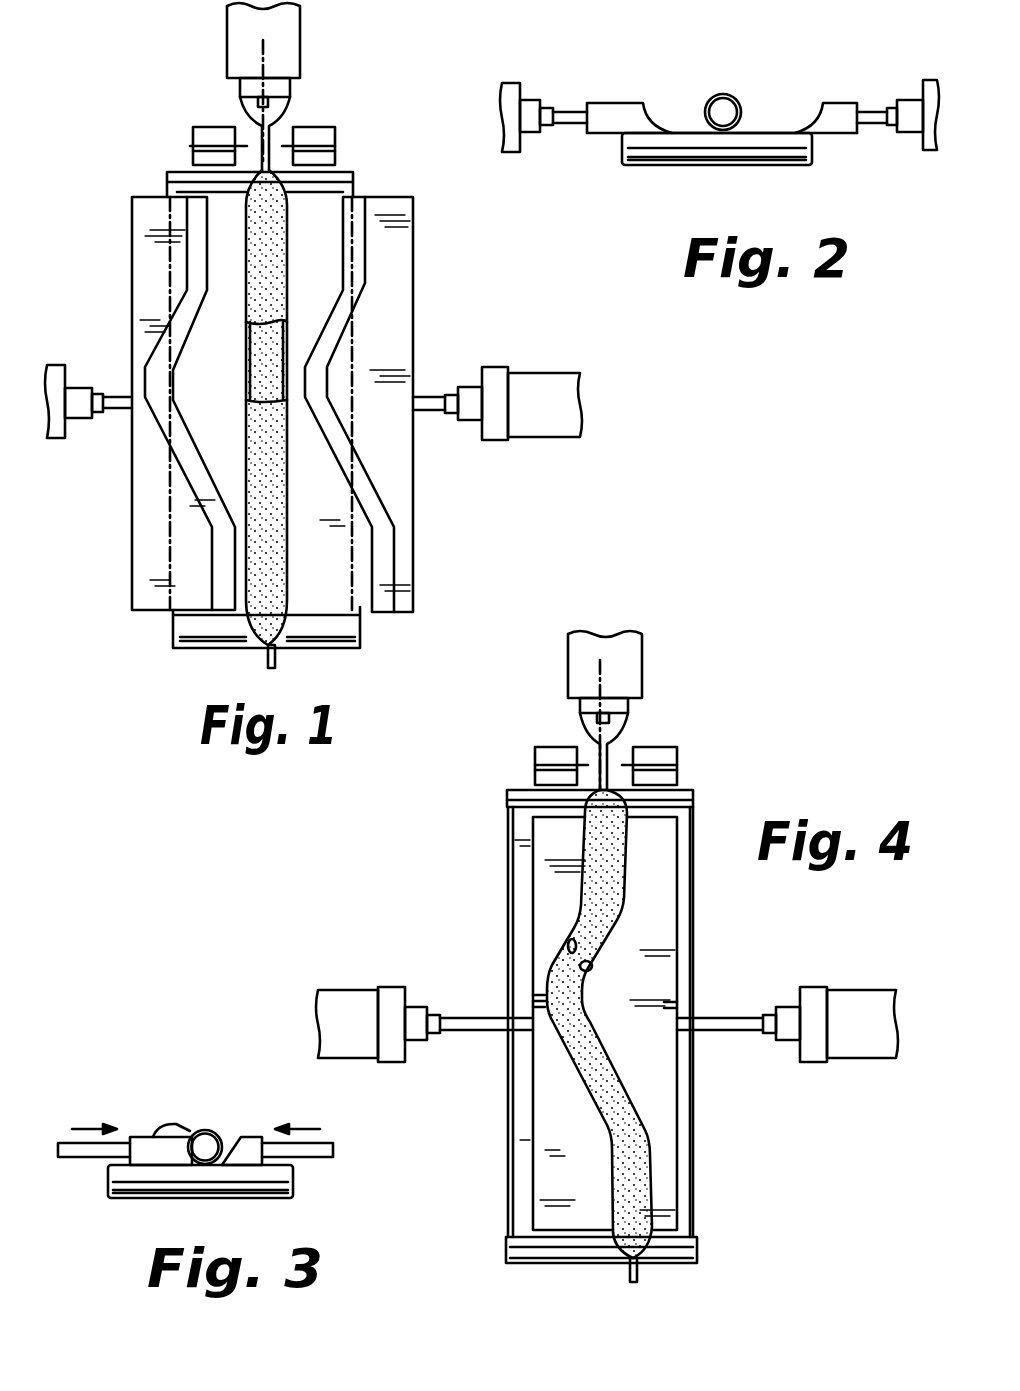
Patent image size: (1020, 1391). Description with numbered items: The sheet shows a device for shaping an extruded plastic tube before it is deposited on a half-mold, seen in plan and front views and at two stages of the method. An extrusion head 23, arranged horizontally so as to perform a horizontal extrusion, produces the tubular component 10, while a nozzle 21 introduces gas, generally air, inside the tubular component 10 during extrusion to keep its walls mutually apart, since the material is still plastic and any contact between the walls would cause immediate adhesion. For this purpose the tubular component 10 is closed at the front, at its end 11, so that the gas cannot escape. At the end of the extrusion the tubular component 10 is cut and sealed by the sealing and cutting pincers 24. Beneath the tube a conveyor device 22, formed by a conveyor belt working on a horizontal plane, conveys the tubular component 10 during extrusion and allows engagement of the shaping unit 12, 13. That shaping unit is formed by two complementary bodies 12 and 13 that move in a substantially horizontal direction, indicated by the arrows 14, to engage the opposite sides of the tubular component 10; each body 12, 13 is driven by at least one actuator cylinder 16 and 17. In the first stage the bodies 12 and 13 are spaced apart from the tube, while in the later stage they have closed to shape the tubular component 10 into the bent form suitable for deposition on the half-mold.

In FIG. 1, the tubular component 10 is at (280, 253).
In FIG. 2, the tubular component 10 is at (723, 93).
In FIG. 3, the tubular component 10 is at (190, 1145).
In FIG. 4, the tubular component 10 is at (613, 850).
In FIG. 1, the end 11 is at (268, 658).
In FIG. 4, the end 11 is at (637, 1275).
In FIG. 1, the shaping unit part 12 is at (197, 470).
In FIG. 2, the shaping unit part 12 is at (645, 108).
In FIG. 3, the shaping unit part 12 is at (208, 1140).
In FIG. 4, the shaping unit part 12 is at (563, 960).
In FIG. 1, the shaping unit part 13 is at (370, 493).
In FIG. 2, the shaping unit part 13 is at (818, 115).
In FIG. 3, the shaping unit part 13 is at (237, 1147).
In FIG. 4, the shaping unit part 13 is at (592, 972).
In FIG. 3, the arrows 14 is at (80, 1127).
In FIG. 1, the actuator cylinder 16 is at (62, 363).
In FIG. 2, the actuator cylinder 16 is at (512, 152).
In FIG. 4, the actuator cylinder 16 is at (393, 996).
In FIG. 1, the actuator cylinder 17 is at (527, 385).
In FIG. 2, the actuator cylinder 17 is at (927, 132).
In FIG. 4, the actuator cylinder 17 is at (809, 1005).
In FIG. 1, the nozzle 21 is at (265, 65).
In FIG. 4, the nozzle 21 is at (603, 690).
In FIG. 1, the conveyor device 22 is at (333, 595).
In FIG. 2, the conveyor device 22 is at (728, 157).
In FIG. 3, the conveyor device 22 is at (140, 1188).
In FIG. 4, the conveyor device 22 is at (685, 1172).
In FIG. 1, the extrusion head 23 is at (247, 82).
In FIG. 1, the sealing and cutting pincers 24 is at (205, 128).
In FIG. 4, the sealing and cutting pincers 24 is at (553, 748).